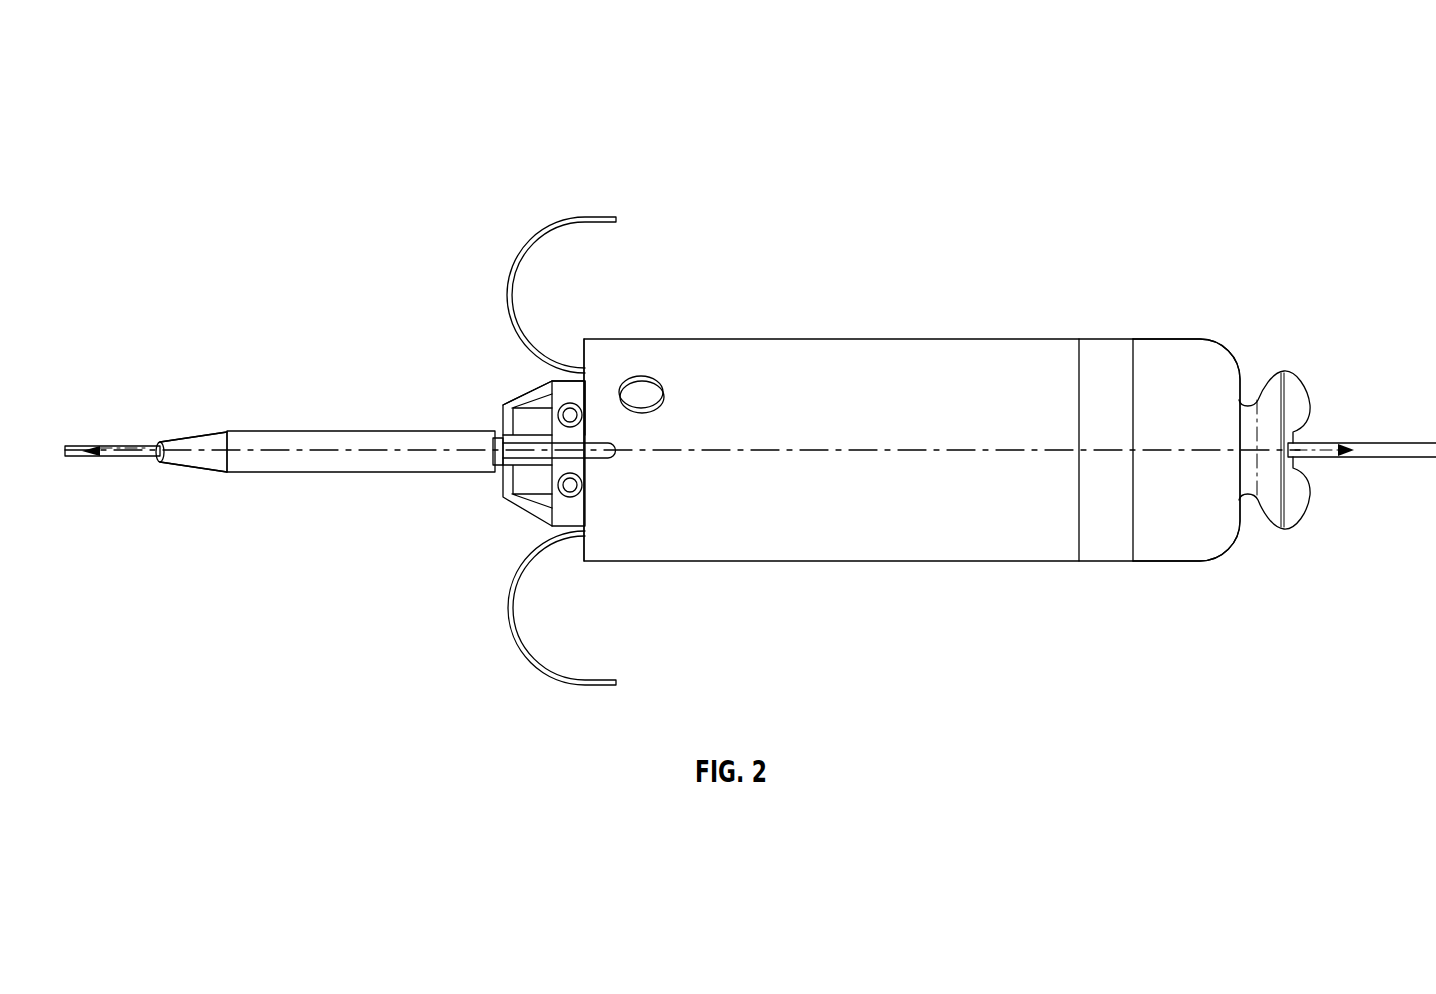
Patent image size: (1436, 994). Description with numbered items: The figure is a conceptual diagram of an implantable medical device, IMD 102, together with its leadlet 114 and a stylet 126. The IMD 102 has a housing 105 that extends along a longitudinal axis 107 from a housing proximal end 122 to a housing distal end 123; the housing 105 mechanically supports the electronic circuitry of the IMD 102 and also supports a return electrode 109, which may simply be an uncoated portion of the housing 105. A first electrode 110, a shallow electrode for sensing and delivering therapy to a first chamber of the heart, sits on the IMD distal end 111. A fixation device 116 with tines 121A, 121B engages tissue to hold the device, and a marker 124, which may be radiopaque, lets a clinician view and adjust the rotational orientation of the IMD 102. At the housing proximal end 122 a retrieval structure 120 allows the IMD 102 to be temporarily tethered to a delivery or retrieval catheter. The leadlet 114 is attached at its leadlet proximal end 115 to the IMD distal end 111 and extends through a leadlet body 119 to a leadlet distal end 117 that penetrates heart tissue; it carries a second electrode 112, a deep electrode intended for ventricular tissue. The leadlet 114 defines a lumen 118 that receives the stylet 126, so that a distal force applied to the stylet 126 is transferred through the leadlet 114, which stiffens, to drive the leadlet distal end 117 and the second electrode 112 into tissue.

The implantable medical device (IMD) 102 is at (236, 131).
The housing 105 is at (866, 338).
The longitudinal axis 107 is at (1160, 447).
The return electrode 109 is at (1083, 337).
The first electrode 110 is at (498, 470).
The IMD distal end 111 is at (546, 407).
The second electrode 112 is at (165, 476).
The leadlet 114 is at (318, 576).
The leadlet proximal end 115 is at (493, 432).
The fixation device 116 is at (444, 267).
The leadlet distal end 117 is at (188, 432).
The lumen 118 is at (153, 441).
The leadlet body 119 is at (300, 476).
The retrieval structure 120 is at (1280, 383).
The tine 121A is at (603, 212).
The tine 121B is at (578, 690).
The housing proximal end 122 is at (1197, 337).
The housing distal end 123 is at (604, 338).
The marker 124 is at (651, 378).
The stylet 126 is at (1362, 442).